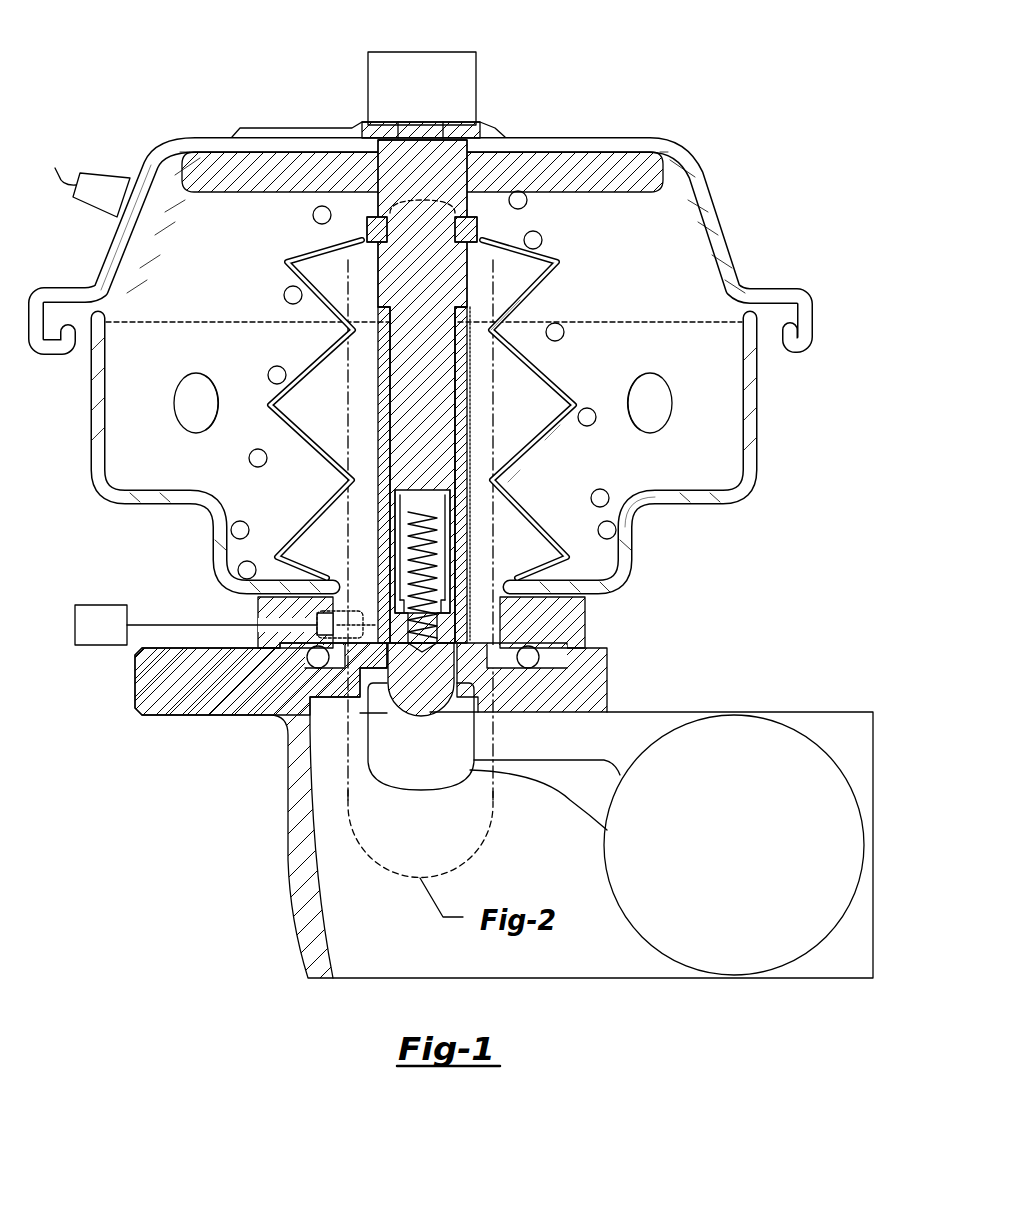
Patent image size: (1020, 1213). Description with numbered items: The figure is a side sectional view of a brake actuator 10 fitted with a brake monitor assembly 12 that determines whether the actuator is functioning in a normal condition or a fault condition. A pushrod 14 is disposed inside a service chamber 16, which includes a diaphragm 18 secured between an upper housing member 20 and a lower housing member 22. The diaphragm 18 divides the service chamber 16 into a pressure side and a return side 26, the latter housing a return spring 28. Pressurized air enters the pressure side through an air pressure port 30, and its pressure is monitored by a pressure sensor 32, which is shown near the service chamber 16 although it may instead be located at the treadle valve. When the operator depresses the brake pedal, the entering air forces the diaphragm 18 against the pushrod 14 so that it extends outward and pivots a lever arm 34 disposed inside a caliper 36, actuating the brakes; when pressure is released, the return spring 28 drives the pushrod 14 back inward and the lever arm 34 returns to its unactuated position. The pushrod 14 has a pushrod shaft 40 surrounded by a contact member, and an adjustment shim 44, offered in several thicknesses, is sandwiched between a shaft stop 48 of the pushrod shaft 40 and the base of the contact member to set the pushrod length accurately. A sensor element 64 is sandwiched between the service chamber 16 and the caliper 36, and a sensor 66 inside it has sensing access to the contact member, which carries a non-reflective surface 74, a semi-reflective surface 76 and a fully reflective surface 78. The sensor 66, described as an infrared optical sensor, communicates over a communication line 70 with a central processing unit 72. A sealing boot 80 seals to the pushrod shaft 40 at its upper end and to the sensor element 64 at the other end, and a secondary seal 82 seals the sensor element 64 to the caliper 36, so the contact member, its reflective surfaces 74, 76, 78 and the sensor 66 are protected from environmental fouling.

The brake actuator 10 is at (603, 40).
The brake monitor assembly 12 is at (212, 607).
The pushrod 14 is at (378, 405).
The service chamber 16 is at (765, 386).
The diaphragm 18 is at (120, 277).
The upper housing member 20 is at (700, 165).
The lower housing member 22 is at (728, 497).
The return side 26 is at (655, 235).
The return spring 28 is at (558, 338).
The air pressure port 30 is at (56, 168).
The pressure sensor 32 is at (114, 176).
The lever arm 34 is at (440, 767).
The caliper 36 is at (295, 875).
The pushrod shaft 40 is at (505, 240).
The adjustment shim 44 is at (455, 310).
The shaft stop 48 is at (372, 312).
The sensor element 64 is at (580, 612).
The sensor 66 is at (330, 630).
The communication line 70 is at (143, 622).
The central processing unit 72 is at (106, 604).
The non-reflective surface 74 is at (470, 620).
The semi-reflective surface 76 is at (508, 482).
The fully reflective surface 78 is at (527, 342).
The sealing boot 80 is at (545, 440).
The secondary seal 82 is at (528, 660).